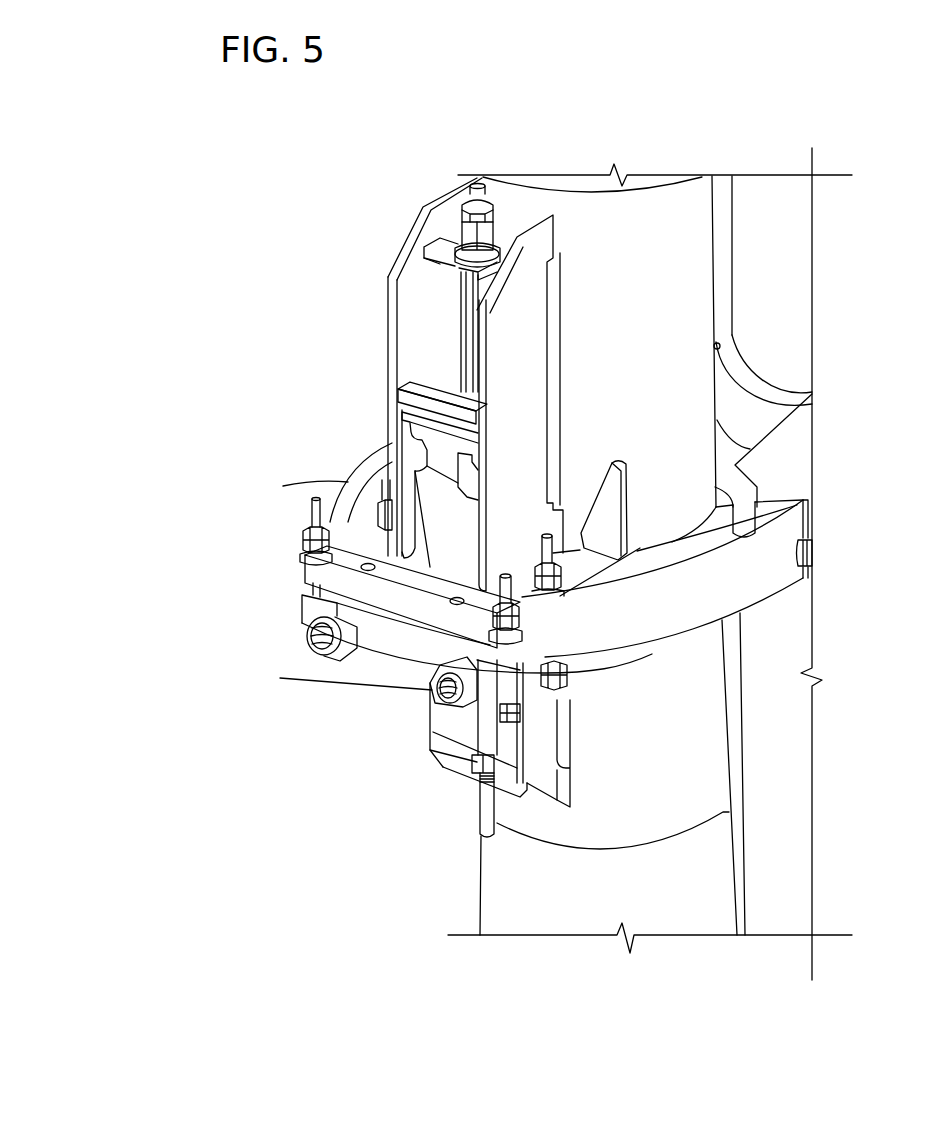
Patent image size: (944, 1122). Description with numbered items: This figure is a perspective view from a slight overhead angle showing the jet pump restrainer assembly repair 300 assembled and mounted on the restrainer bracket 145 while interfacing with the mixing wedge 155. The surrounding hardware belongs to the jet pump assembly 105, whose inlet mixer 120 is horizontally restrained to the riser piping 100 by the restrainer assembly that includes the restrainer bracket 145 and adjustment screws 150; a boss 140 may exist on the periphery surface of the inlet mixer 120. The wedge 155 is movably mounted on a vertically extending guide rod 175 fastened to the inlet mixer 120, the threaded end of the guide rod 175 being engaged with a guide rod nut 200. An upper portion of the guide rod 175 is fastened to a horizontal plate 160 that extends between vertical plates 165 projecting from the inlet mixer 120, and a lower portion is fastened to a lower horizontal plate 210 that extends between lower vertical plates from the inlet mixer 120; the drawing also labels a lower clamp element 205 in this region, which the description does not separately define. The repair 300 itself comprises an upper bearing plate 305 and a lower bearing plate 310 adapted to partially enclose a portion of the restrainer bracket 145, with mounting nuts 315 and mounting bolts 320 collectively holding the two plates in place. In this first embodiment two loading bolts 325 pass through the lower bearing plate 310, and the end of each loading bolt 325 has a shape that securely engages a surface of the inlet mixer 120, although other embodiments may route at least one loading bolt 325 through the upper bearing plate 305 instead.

The riser piping 100 is at (767, 184).
The jet pump assembly 105 is at (592, 172).
The inlet mixer 120 is at (488, 870).
The boss 140 is at (647, 553).
The restrainer bracket 145 is at (645, 648).
The adjustment screws 150 is at (743, 513).
The wedge 155 is at (447, 397).
The horizontal plate 160 is at (443, 242).
The vertical plates 165 is at (395, 258).
The guide rod 175 is at (473, 291).
The guide rod nut 200 is at (478, 771).
The clamp body 205 is at (497, 757).
The horizontal plate 210 is at (440, 754).
The jet pump restrainer assembly repair 300 is at (138, 575).
The upper bearing plate 305 is at (308, 563).
The lower bearing plate 310 is at (300, 610).
The mounting nuts 315 is at (312, 503).
The mounting bolts 320 is at (523, 713).
The loading bolts 325 is at (436, 681).